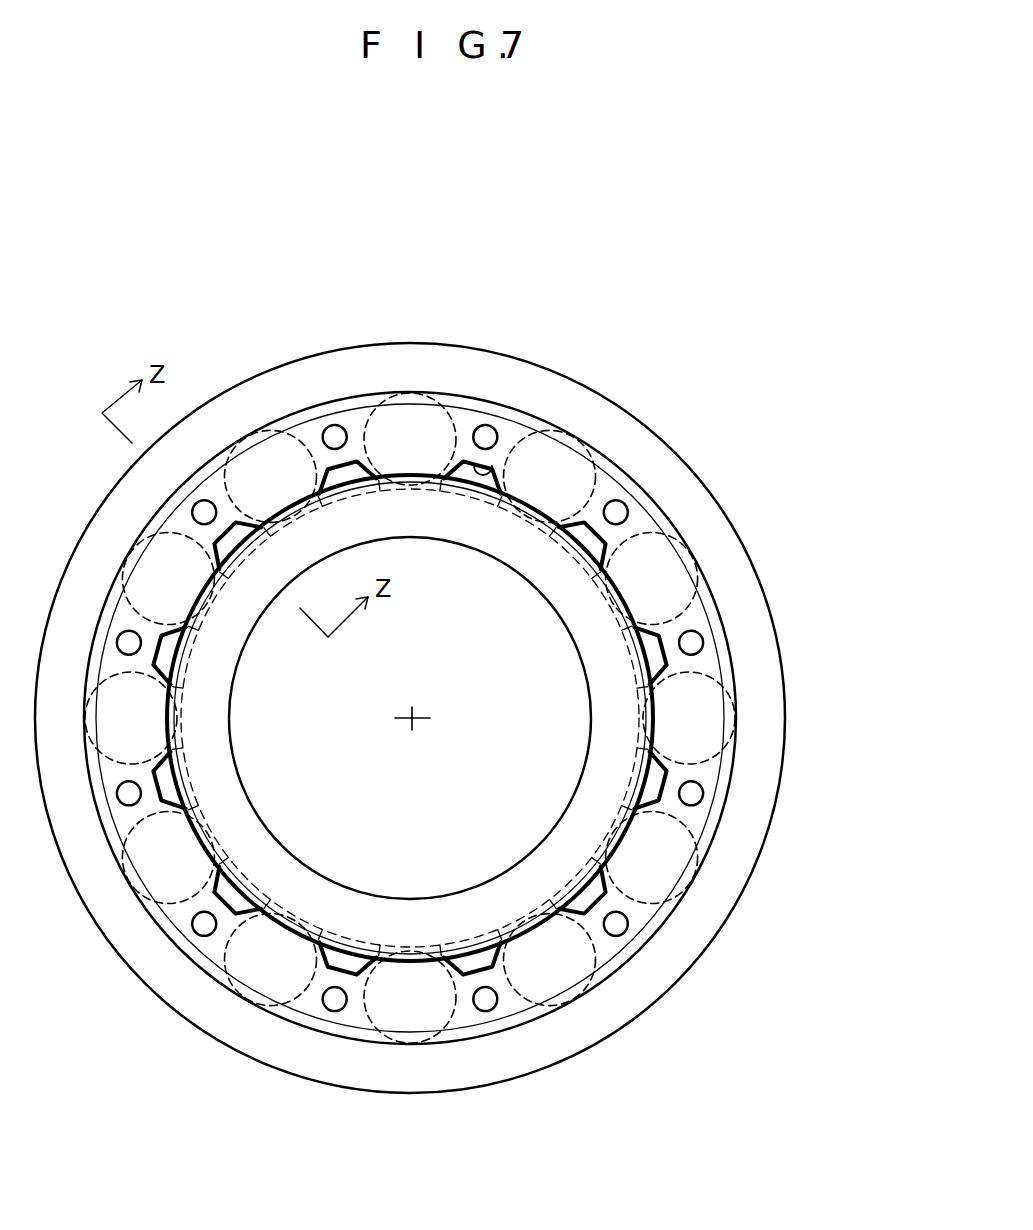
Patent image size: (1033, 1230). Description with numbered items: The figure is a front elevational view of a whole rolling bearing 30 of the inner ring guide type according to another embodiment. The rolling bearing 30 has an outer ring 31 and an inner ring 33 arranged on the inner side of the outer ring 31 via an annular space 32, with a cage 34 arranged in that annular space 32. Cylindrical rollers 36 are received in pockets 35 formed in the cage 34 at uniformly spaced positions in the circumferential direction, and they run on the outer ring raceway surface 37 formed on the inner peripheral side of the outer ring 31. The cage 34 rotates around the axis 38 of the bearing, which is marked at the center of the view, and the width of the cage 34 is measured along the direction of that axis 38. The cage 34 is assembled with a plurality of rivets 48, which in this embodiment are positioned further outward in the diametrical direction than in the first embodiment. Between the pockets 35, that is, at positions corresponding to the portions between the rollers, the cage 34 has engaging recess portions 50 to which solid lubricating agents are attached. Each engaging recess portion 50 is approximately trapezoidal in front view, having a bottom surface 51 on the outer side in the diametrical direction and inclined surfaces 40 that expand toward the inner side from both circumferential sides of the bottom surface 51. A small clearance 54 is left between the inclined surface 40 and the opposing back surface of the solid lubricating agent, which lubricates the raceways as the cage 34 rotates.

The rolling bearing 30 is at (668, 372).
The outer ring 31 is at (655, 457).
The annular space 32 is at (707, 593).
The inner ring 33 is at (597, 700).
The cage 34 is at (697, 817).
The pocket 35 is at (717, 673).
The cylindrical roller 36 is at (668, 820).
The outer ring raceway surface 37 is at (328, 427).
The axis 38 is at (411, 715).
The inclined surface 40 is at (463, 477).
The rivet 48 is at (703, 640).
The engaging recess portion 50 is at (643, 533).
The bottom surface 51 is at (500, 463).
The small clearance 54 is at (390, 463).